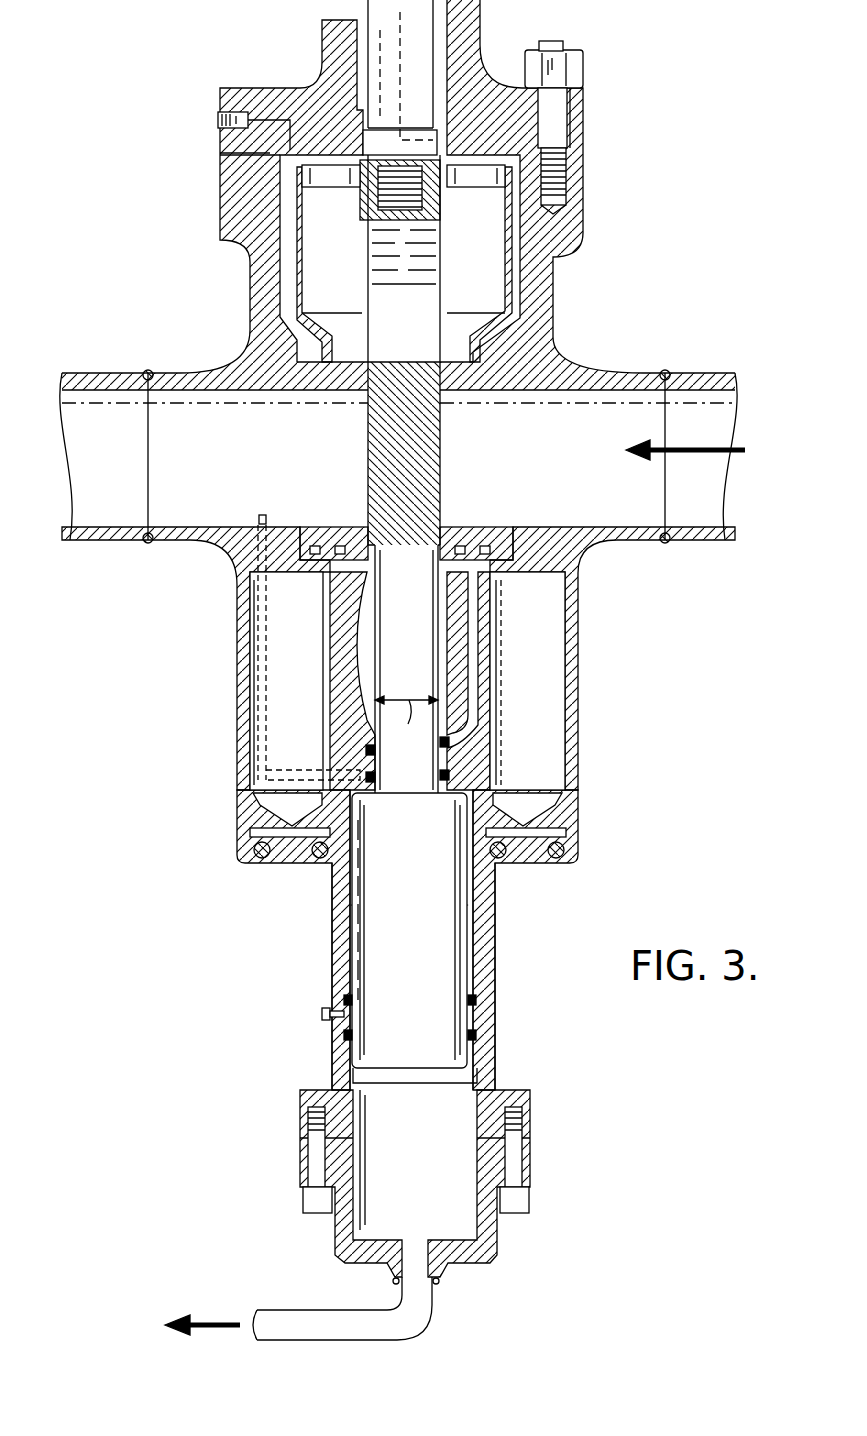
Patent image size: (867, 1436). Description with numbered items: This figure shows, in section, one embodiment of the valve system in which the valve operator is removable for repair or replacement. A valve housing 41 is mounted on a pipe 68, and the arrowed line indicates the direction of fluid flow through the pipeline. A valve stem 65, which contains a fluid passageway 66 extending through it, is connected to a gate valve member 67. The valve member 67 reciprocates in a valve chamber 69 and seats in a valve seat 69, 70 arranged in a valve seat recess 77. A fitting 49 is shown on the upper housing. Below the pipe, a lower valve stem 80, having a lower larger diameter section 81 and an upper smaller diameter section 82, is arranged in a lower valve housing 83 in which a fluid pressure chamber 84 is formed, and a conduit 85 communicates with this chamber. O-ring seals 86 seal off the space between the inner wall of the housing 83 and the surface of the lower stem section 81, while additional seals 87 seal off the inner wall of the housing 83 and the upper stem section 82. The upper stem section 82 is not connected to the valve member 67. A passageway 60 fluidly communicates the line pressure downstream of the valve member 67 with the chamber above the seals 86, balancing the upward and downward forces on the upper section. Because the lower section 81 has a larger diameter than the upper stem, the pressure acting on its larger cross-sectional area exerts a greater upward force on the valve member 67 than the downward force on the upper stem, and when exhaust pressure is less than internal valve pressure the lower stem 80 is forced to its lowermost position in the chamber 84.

The valve housing 41 is at (592, 202).
The grease fitting 49 is at (246, 97).
The passageway 60 is at (265, 512).
The valve stem 65 is at (392, 52).
The fluid passageway 66 is at (398, 78).
The gate valve member 67 is at (416, 443).
The pipe 68 is at (703, 370).
The valve chamber 69 is at (515, 298).
The valve seat 70 is at (483, 528).
The valve seat recess 77 is at (497, 548).
The lower valve stem 80 is at (385, 930).
The lower larger diameter section 81 is at (434, 999).
The upper smaller diameter section 82 is at (426, 650).
The lower valve housing 83 is at (344, 1000).
The fluid pressure chamber 84 is at (455, 1130).
The conduit 85 is at (300, 1320).
The O-ring seals 86 is at (478, 1036).
The seals 87 is at (450, 777).